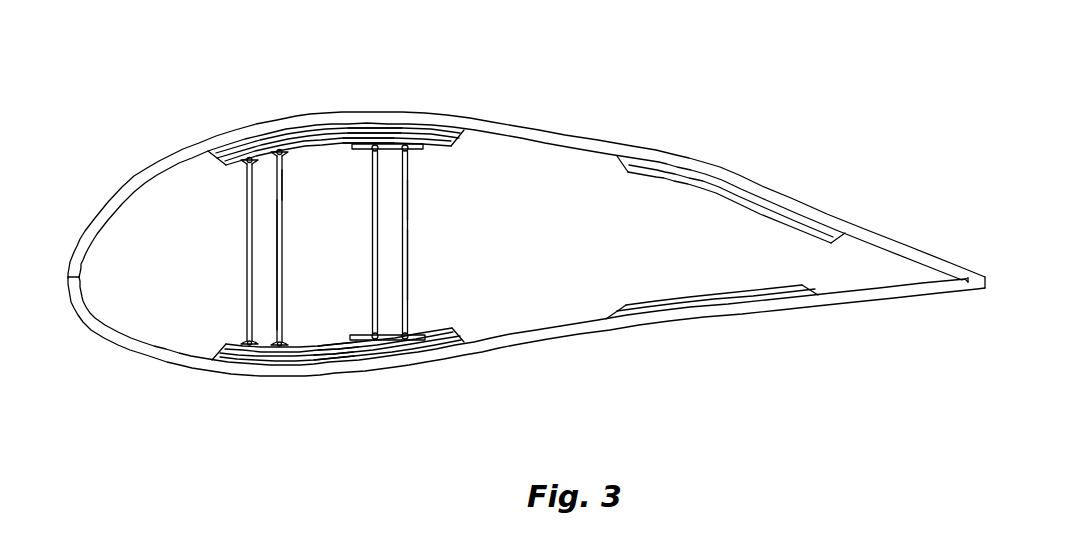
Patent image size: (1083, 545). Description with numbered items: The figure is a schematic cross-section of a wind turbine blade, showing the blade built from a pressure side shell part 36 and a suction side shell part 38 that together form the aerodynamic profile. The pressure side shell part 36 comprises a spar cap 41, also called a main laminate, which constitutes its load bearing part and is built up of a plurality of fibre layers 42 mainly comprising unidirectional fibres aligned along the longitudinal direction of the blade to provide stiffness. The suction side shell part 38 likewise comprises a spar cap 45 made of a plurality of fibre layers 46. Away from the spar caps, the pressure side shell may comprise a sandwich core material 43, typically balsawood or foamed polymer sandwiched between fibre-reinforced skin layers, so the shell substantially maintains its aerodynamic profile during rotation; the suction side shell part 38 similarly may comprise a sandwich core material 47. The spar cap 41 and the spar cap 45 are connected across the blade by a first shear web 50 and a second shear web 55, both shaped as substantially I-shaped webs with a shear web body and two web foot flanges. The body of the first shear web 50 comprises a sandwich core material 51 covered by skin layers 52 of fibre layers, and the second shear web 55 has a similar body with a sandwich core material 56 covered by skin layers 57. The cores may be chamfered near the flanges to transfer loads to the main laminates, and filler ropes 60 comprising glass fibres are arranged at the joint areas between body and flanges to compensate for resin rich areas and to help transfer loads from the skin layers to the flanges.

The pressure side shell part 36 is at (579, 344).
The suction side shell part 38 is at (564, 130).
The spar cap 41 is at (417, 373).
The fibre layers 42 is at (352, 375).
The sandwich core material 43 is at (727, 316).
The spar cap 45 is at (297, 118).
The fibre layers 46 is at (387, 118).
The sandwich core material 47 is at (723, 183).
The first shear web 50 is at (285, 248).
The sandwich core material 51 is at (275, 272).
The skin layers 52 is at (282, 197).
The second shear web 55 is at (412, 242).
The sandwich core material 56 is at (409, 269).
The skin layers 57 is at (408, 214).
The filler ropes 60 is at (373, 152).